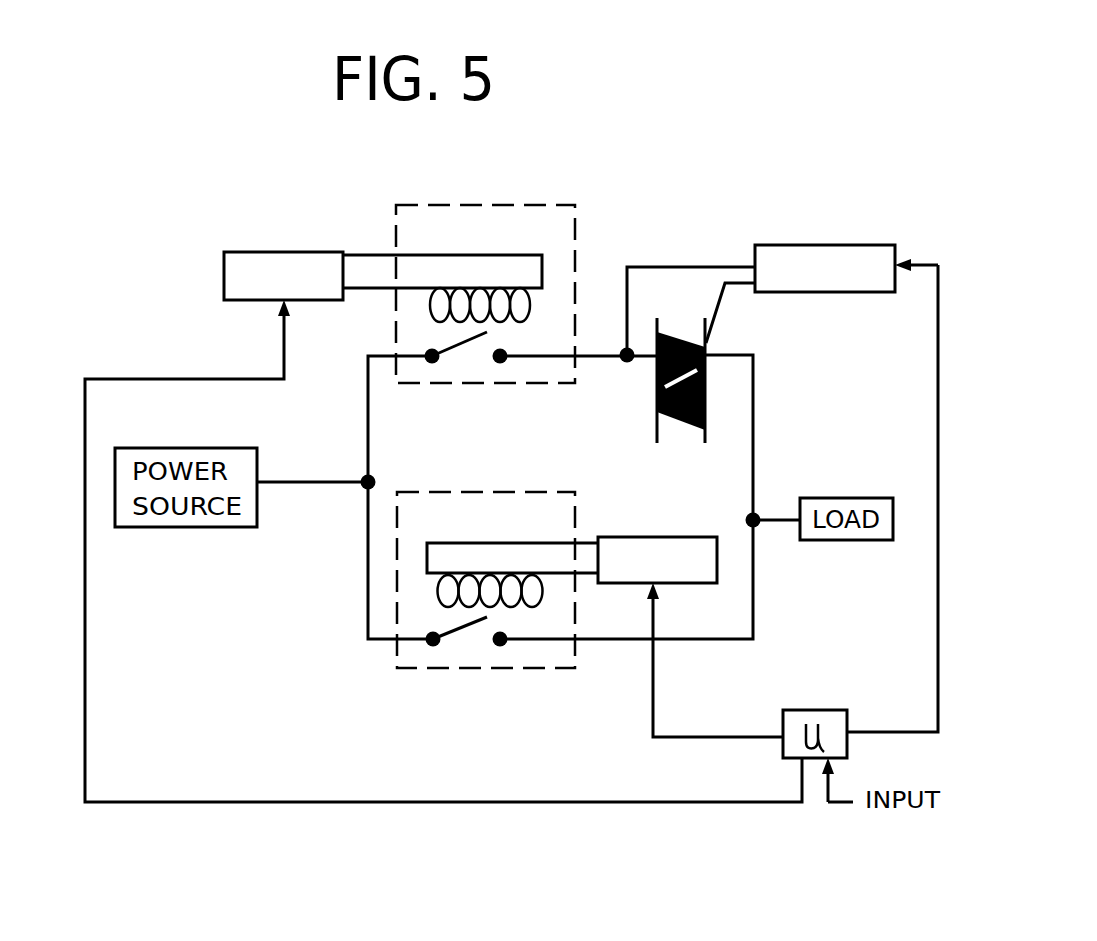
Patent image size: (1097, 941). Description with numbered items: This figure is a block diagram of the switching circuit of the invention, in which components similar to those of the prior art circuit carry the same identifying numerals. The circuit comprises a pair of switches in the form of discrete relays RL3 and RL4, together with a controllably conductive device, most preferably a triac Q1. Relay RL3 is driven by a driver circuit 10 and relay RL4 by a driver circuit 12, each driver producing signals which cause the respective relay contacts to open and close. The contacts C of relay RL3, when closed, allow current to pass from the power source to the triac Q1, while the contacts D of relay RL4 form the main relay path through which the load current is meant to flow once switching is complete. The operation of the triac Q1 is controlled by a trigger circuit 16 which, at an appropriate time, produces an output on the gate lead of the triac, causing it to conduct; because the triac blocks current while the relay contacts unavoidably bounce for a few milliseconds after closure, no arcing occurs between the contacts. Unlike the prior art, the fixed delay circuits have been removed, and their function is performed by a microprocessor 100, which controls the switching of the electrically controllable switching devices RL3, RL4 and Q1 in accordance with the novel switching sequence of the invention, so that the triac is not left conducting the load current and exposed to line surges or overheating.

The driver circuit 10 is at (242, 303).
The driver circuit 12 is at (672, 535).
The trigger circuit 16 is at (865, 292).
The microprocessor 100 is at (845, 741).
The relay RL3 is at (443, 385).
The relay RL4 is at (407, 673).
The contacts C is at (470, 350).
The contacts D is at (473, 640).
The triac Q1 is at (650, 387).